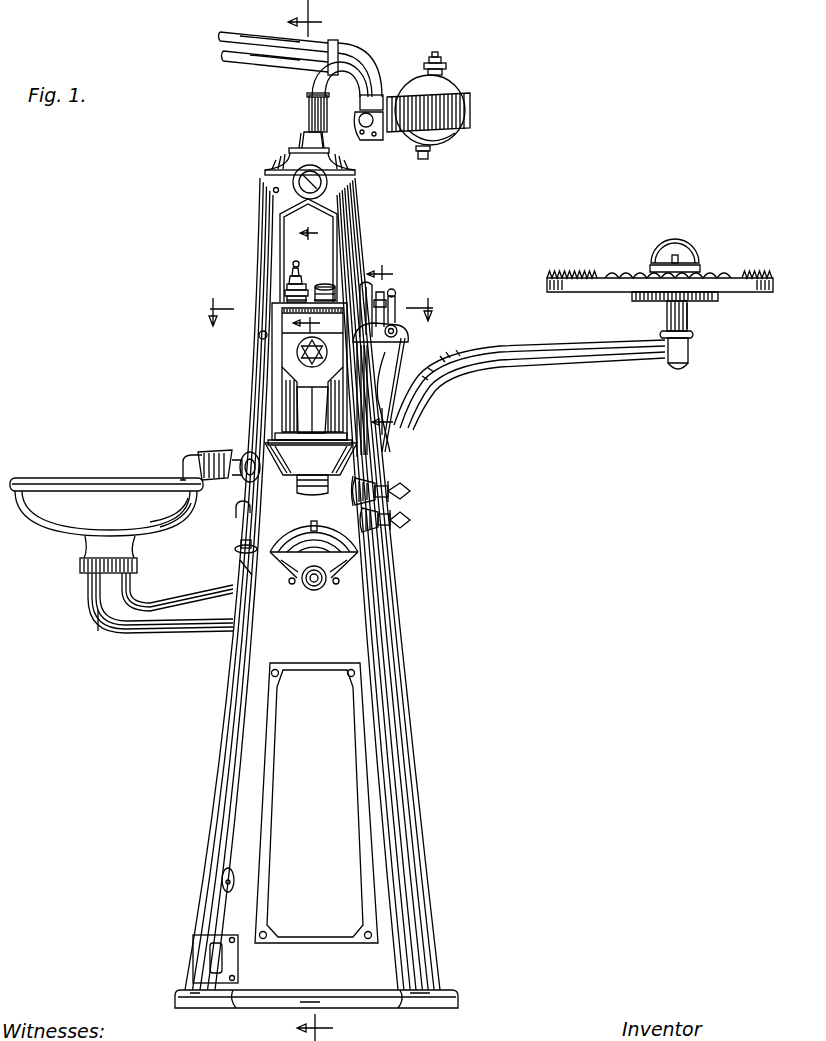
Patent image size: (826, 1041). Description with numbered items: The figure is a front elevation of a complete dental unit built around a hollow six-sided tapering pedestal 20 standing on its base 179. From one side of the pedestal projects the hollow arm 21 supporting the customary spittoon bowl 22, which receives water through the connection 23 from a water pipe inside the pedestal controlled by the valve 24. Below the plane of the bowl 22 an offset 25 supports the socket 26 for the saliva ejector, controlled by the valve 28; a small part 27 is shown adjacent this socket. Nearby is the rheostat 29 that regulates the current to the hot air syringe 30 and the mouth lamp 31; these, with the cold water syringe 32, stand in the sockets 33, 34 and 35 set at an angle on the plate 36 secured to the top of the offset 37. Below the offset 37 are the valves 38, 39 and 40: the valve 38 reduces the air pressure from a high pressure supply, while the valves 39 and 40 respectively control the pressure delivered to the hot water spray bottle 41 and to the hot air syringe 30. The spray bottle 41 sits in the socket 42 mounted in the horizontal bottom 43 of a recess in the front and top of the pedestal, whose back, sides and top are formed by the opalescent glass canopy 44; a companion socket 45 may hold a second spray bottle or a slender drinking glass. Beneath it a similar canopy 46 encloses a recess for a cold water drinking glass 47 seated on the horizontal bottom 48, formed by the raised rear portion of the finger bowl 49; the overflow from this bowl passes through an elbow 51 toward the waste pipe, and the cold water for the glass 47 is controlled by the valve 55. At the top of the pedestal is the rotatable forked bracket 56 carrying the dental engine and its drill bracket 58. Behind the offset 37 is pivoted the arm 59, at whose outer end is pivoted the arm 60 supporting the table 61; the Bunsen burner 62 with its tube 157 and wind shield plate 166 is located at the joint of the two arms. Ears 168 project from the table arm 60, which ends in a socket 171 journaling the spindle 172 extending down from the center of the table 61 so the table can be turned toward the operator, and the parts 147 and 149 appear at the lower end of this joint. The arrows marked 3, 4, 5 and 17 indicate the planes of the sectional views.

The section line 3- 3 is at (320, 312).
The section line 4- 4 is at (310, 520).
The section line 5- 5 is at (313, 274).
The section line 17- 17 is at (391, 343).
The pedestal 20 is at (396, 635).
The hollow arm 21 is at (165, 612).
The spittoon bowl 22 is at (70, 497).
The connection 23 is at (190, 470).
The valve 24 is at (240, 455).
The offset 25 is at (246, 568).
The socket 26 is at (236, 549).
The hook 27 is at (225, 516).
The valve 28 is at (222, 456).
The rheostat 29 is at (346, 556).
The hot air syringe 30 is at (374, 288).
The mouth lamp 31 is at (384, 294).
The cold water syringe 32 is at (396, 298).
The socket 33 is at (402, 345).
The socket 34 is at (397, 334).
The socket 35 is at (396, 327).
The plate 36 is at (372, 350).
The offset 37 is at (374, 374).
The valve 38 is at (403, 517).
The valve 39 is at (388, 476).
The valve 40 is at (407, 490).
The hot water spray bottle 41 is at (274, 274).
The socket 42 is at (287, 291).
The horizontal bottom 43 is at (325, 294).
The opalescent glass canopy 44 is at (340, 250).
The companion socket 45 is at (330, 282).
The canopy 46 is at (286, 377).
The cold water drinking glass 47 is at (306, 406).
The horizontal bottom 48 is at (350, 430).
The finger bowl 49 is at (313, 462).
The elbow 51 is at (462, 100).
The valve 55 is at (298, 352).
The rotatable forked bracket 56 is at (304, 140).
The bracket 58 is at (251, 36).
The arm 59 is at (560, 358).
The arm 60 is at (692, 331).
The table 61 is at (580, 279).
The Bunsen burner 62 is at (682, 263).
The lower stem 147 is at (690, 360).
The stem end 149 is at (676, 372).
The tube 157 is at (662, 272).
The wind shield plate 166 is at (676, 244).
The ears 168 is at (662, 335).
The socket 171 is at (690, 325).
The spindle 172 is at (668, 325).
The base 179 is at (452, 998).